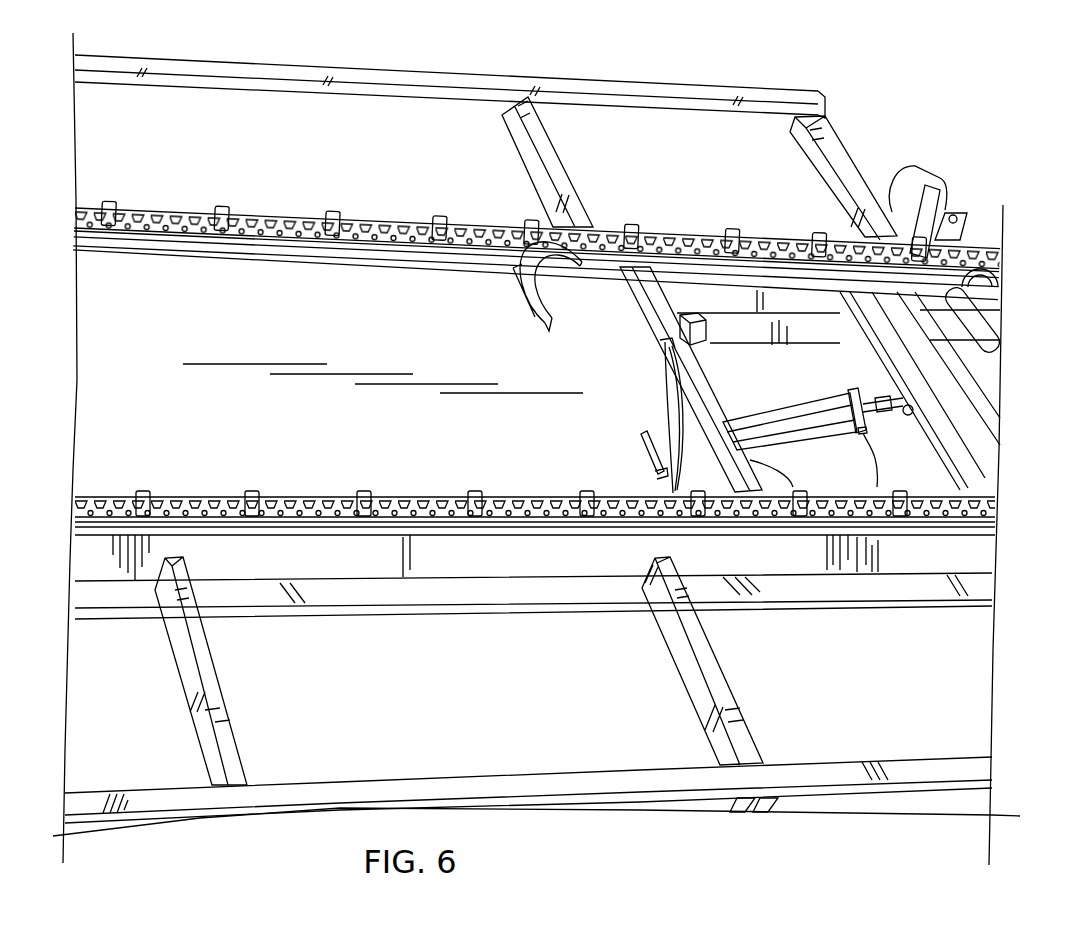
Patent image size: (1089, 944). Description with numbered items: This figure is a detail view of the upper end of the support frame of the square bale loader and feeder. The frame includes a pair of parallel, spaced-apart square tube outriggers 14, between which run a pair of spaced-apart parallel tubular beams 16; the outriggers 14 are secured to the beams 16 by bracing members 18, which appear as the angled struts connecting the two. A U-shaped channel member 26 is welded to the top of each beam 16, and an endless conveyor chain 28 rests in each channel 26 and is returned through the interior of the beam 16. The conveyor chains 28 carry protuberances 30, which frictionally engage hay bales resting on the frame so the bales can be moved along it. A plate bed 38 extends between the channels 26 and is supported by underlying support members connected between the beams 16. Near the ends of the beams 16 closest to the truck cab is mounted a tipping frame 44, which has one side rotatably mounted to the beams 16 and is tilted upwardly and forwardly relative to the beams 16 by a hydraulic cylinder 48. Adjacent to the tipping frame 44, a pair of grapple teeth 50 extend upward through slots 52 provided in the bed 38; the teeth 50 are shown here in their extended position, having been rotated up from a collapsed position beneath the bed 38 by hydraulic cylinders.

The square tube outriggers 14 is at (383, 70).
The tubular beams 16 is at (167, 550).
The bracing members 18 is at (555, 158).
The U channel member 26 is at (372, 242).
The endless conveyor chain 28 is at (160, 211).
The protuberances 30 is at (330, 218).
The plate bed 38 is at (240, 412).
The tipping frame 44 is at (720, 272).
The hydraulic cylinder 48 is at (820, 410).
The grapple teeth 50 is at (520, 235).
The slots 52 is at (541, 323).